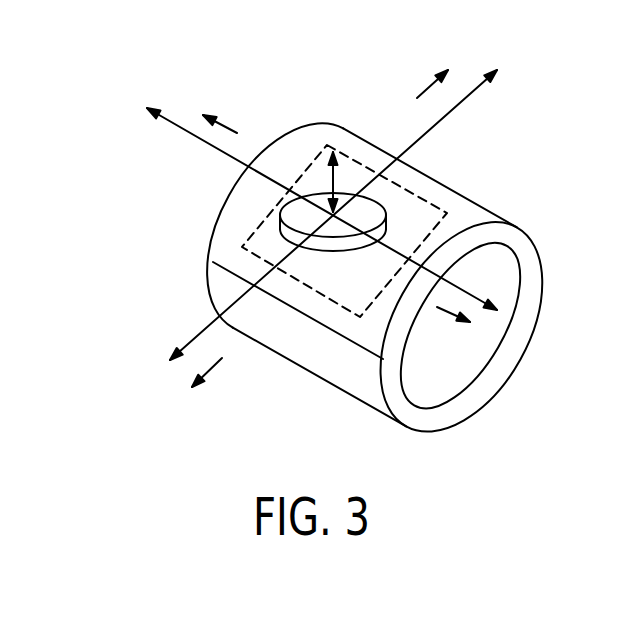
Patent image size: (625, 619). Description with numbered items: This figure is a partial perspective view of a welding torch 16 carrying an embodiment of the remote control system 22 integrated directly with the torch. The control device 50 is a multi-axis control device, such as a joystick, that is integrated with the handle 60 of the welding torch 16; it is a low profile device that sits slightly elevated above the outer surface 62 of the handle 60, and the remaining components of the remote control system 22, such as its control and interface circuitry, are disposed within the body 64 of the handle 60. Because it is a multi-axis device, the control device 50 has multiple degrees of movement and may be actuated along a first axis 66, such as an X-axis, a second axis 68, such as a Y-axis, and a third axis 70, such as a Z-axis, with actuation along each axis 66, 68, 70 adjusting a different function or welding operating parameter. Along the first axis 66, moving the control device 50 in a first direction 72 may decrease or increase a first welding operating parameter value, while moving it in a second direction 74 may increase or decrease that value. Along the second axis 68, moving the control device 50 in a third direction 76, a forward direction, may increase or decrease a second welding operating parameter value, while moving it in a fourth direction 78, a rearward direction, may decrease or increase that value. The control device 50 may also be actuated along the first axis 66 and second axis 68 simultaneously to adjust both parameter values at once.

The welding torch 16 is at (374, 285).
The remote control system 22 is at (306, 171).
The control device 50 is at (361, 208).
The handle 60 is at (303, 197).
The outer surface 62 is at (228, 255).
The body 64 is at (433, 417).
The first axis 66 is at (449, 115).
The second axis 68 is at (492, 246).
The third axis 70 is at (331, 203).
The first direction 72 is at (210, 370).
The second direction 74 is at (427, 89).
The third direction 76 is at (228, 128).
The fourth direction 78 is at (450, 313).